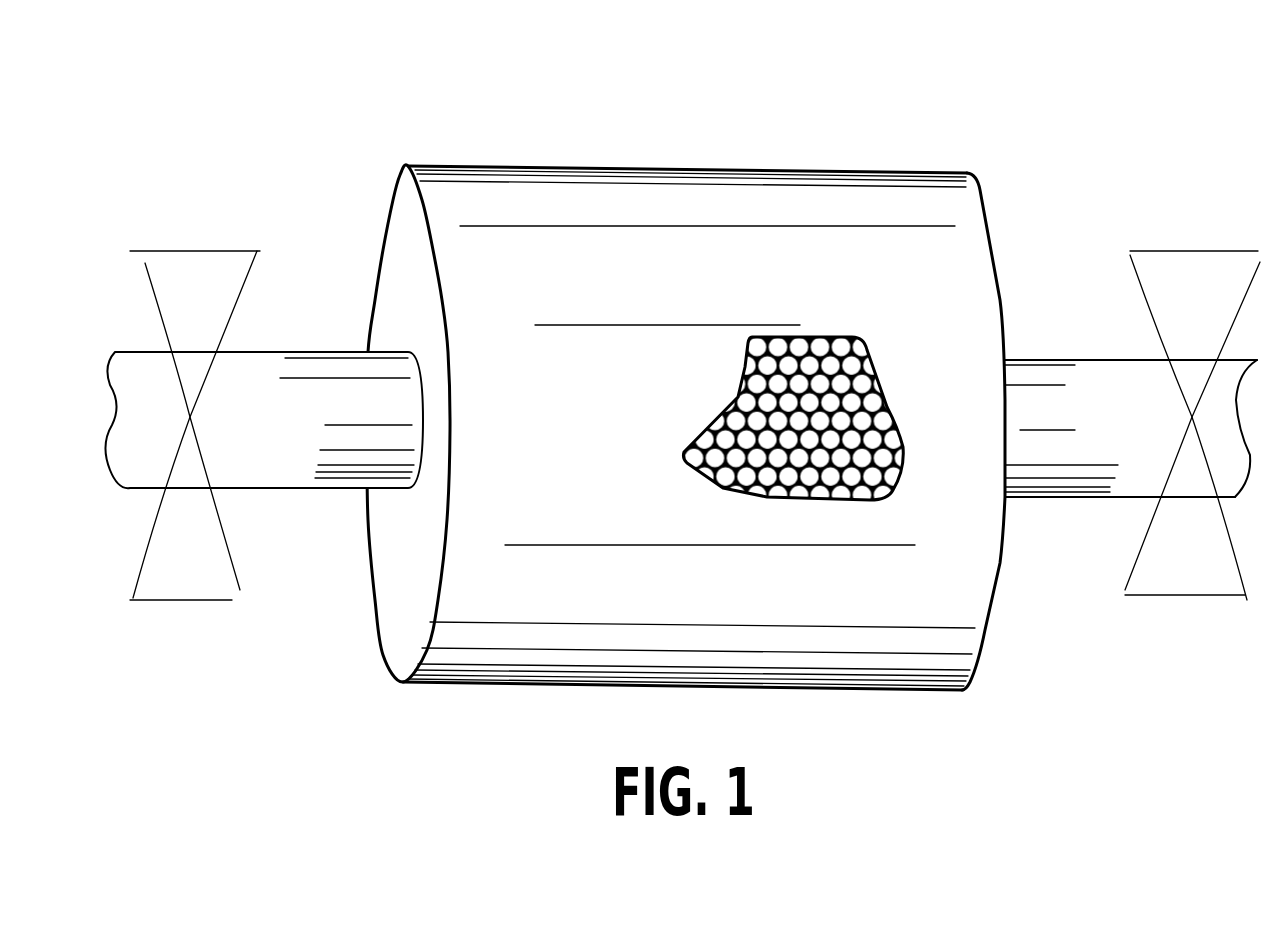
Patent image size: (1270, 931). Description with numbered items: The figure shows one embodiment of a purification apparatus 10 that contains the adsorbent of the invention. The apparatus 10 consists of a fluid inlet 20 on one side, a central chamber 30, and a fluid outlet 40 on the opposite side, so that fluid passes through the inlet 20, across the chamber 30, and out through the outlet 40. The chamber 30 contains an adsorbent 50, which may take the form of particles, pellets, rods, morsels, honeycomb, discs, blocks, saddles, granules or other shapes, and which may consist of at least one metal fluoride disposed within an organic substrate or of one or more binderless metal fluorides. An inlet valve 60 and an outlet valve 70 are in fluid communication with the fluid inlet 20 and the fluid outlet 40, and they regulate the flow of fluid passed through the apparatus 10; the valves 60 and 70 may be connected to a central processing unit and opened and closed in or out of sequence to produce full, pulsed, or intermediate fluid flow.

The purification apparatus 10 is at (823, 90).
The fluid inlet 20 is at (333, 388).
The chamber 30 is at (935, 215).
The fluid outlet 40 is at (1035, 375).
The adsorbent 50 is at (747, 420).
The inlet valve 60 is at (190, 587).
The outlet valve 70 is at (1192, 575).